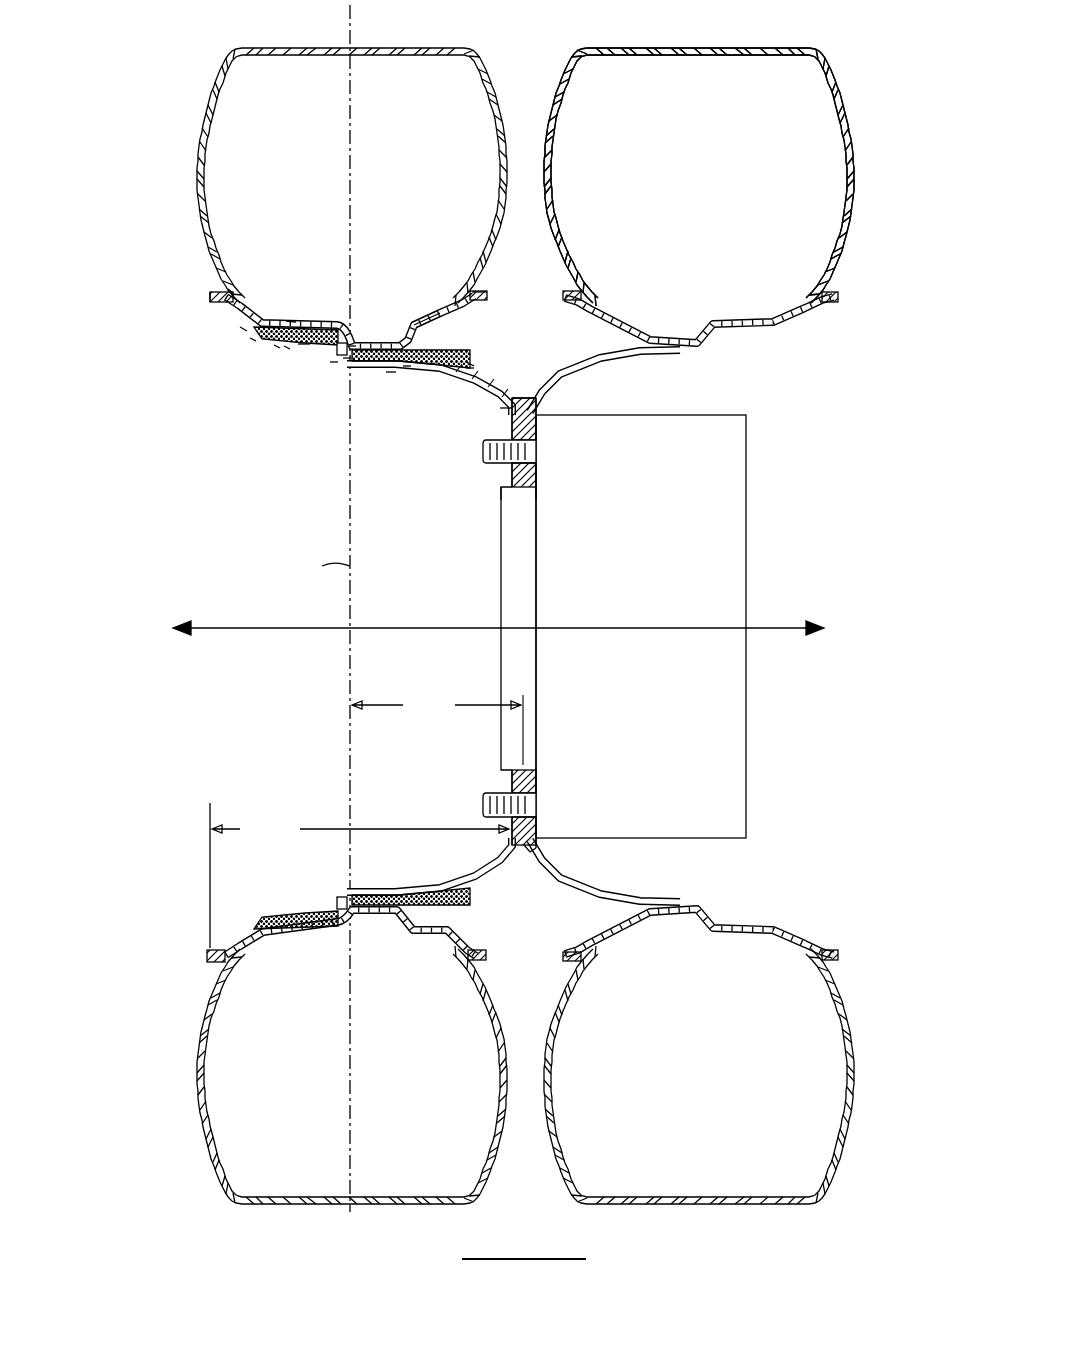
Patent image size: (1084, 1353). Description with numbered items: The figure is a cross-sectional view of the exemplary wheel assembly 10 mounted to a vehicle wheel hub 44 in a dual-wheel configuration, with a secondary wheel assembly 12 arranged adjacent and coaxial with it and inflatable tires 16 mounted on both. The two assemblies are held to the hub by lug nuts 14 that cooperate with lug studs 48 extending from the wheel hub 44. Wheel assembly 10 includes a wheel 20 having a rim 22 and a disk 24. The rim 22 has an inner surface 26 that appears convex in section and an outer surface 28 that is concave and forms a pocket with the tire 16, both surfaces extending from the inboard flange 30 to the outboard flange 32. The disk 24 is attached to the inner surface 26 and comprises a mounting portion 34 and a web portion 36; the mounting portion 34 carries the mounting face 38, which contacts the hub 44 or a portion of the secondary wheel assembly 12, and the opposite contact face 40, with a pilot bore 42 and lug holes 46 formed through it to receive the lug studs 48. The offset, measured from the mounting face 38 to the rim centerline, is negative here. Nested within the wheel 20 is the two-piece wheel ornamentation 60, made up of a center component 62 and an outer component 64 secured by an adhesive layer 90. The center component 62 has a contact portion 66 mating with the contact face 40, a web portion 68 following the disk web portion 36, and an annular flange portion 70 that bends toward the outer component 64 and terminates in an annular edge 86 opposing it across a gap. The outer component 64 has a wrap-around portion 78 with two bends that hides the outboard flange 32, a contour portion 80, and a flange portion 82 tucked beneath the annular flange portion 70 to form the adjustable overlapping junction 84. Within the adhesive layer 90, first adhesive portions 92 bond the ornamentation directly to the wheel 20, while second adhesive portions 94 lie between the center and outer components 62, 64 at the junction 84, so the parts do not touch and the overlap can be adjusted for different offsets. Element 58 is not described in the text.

The wheel assembly 10 is at (150, 194).
The secondary wheel assembly 12 is at (848, 260).
The lug nuts 14 is at (487, 450).
The inflatable tire 16 is at (393, 49).
The wheel 20 is at (268, 346).
The rim 22 is at (437, 316).
The disk 24 is at (495, 380).
The inner surface 26 is at (242, 330).
The outer surface 28 is at (290, 320).
The inboard flange 30 is at (485, 296).
The outboard flange 32 is at (230, 290).
The mounting portion 34 is at (535, 385).
The web portion 36 is at (470, 363).
The mounting face 38 is at (538, 845).
The contact face 40 is at (490, 447).
The pilot bore 42 is at (538, 495).
The vehicle wheel hub 44 is at (730, 478).
The lug holes 46 is at (545, 437).
The lug studs 48 is at (497, 488).
The mounting flange 58 is at (540, 408).
The wheel ornamentation 60 is at (391, 374).
The center component 62 is at (407, 367).
The outer component 64 is at (250, 340).
The contact portion 66 is at (500, 412).
The web portion 68 is at (470, 370).
The annular flange portion 70 is at (304, 348).
The wrap-around portion 78 is at (212, 296).
The contour portion 80 is at (277, 347).
The flange portion 82 is at (347, 360).
The adjustable overlapping junction 84 is at (334, 363).
The annular edge 86 is at (352, 344).
The adhesive layer 90 is at (287, 348).
The first adhesive portions 92 is at (297, 348).
The second adhesive portions 94 is at (337, 360).